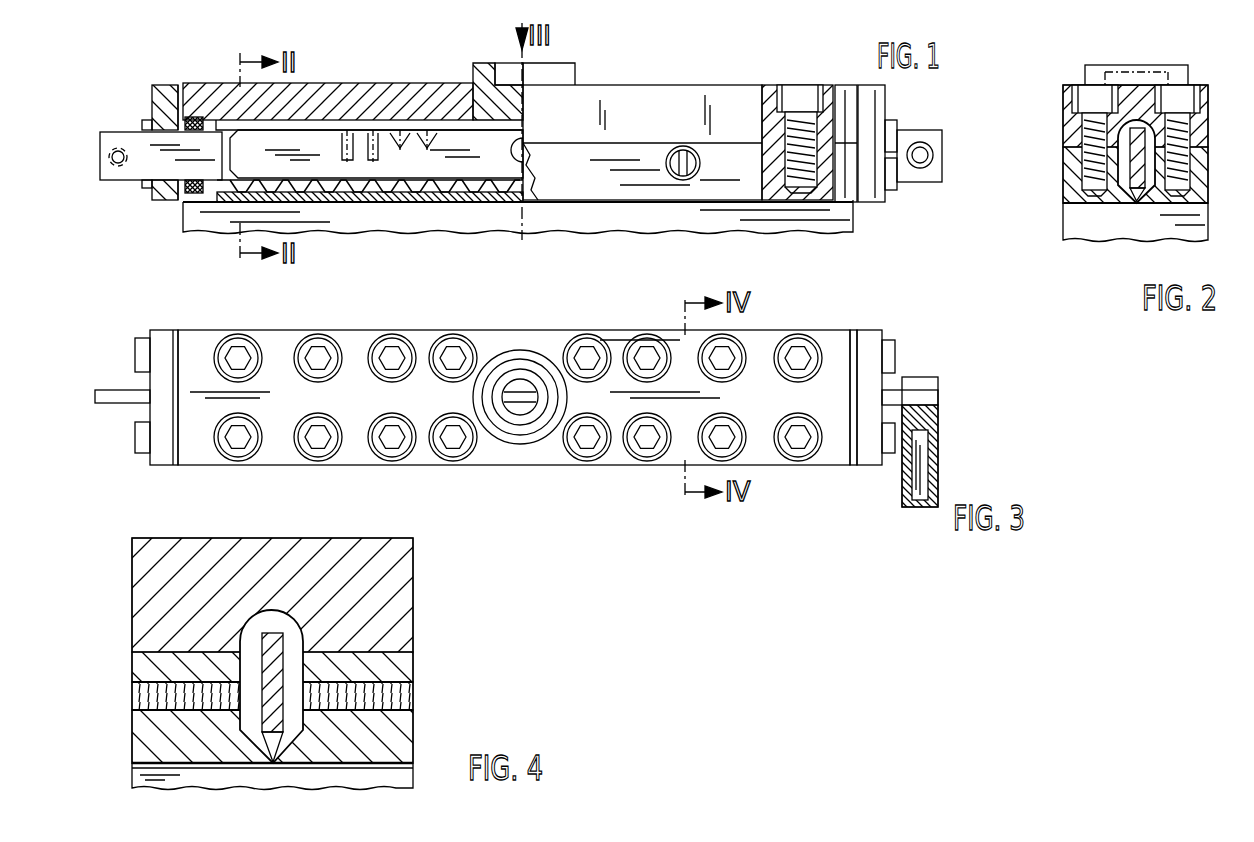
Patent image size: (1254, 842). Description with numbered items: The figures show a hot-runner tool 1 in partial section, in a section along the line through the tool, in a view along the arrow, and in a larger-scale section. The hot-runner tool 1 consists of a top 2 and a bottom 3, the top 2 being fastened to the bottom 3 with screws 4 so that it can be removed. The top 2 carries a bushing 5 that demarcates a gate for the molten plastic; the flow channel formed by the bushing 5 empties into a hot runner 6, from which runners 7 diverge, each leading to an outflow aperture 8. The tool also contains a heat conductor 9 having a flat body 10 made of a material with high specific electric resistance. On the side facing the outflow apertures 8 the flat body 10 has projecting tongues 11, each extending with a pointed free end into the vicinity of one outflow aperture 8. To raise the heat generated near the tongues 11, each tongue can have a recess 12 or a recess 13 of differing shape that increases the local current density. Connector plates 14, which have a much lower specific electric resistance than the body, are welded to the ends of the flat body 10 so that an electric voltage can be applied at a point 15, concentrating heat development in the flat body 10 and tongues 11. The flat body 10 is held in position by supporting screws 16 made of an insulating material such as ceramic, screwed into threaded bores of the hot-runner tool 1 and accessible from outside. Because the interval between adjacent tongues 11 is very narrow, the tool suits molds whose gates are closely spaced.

In FIG. 1, the hot-runner tool 1 is at (699, 70).
In FIG. 1, the top 2 is at (733, 105).
In FIG. 1, the bottom 3 is at (842, 193).
In FIG. 1, the screws 4 is at (800, 97).
In FIG. 2, the screws 4 is at (1187, 100).
In FIG. 3, the screws 4 is at (247, 352).
In FIG. 1, the bushing 5 is at (505, 77).
In FIG. 2, the bushing 5 is at (1132, 70).
In FIG. 1, the hot runner 6 is at (330, 127).
In FIG. 2, the hot runner 6 is at (1163, 203).
In FIG. 4, the hot runner 6 is at (297, 645).
In FIG. 4, the runners 7 is at (287, 757).
In FIG. 4, the outflow aperture 8 is at (288, 763).
In FIG. 1, the heat conductor 9 is at (296, 144).
In FIG. 1, the flat body 10 is at (452, 137).
In FIG. 4, the flat body 10 is at (275, 640).
In FIG. 1, the tongues 11 is at (373, 183).
In FIG. 2, the tongues 11 is at (1130, 197).
In FIG. 4, the tongues 11 is at (273, 760).
In FIG. 1, the recess 12 is at (353, 143).
In FIG. 1, the recess 13 is at (402, 130).
In FIG. 1, the connector plates 14 is at (140, 145).
In FIG. 3, the connector plates 14 is at (117, 390).
In FIG. 1, the point 15 is at (227, 157).
In FIG. 4, the supporting screws 16 is at (165, 687).